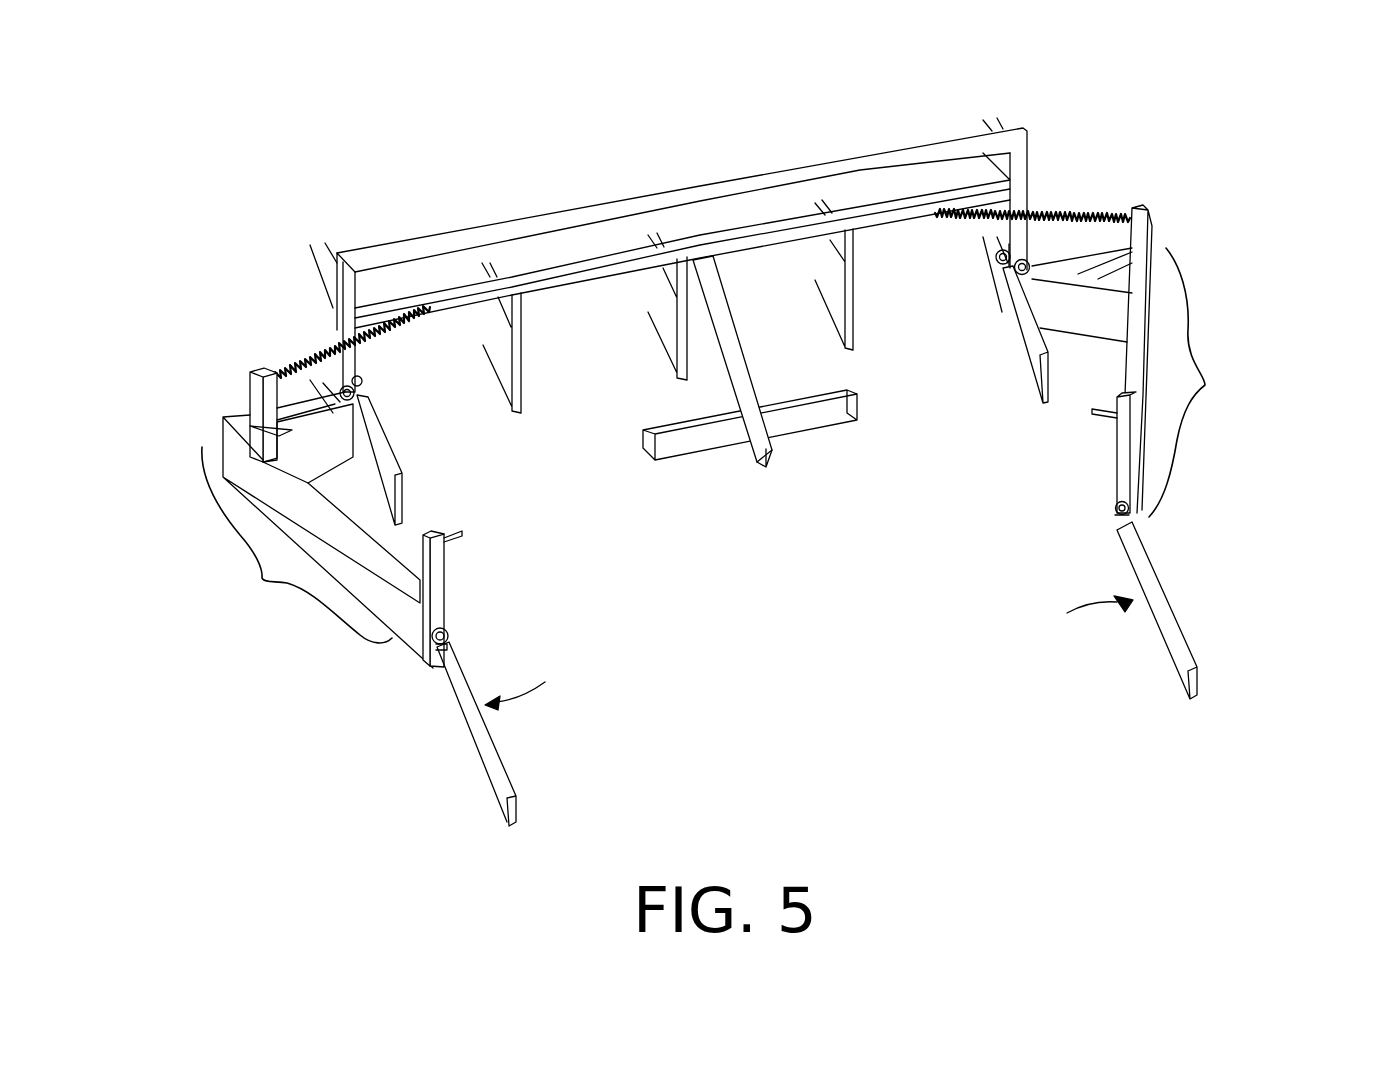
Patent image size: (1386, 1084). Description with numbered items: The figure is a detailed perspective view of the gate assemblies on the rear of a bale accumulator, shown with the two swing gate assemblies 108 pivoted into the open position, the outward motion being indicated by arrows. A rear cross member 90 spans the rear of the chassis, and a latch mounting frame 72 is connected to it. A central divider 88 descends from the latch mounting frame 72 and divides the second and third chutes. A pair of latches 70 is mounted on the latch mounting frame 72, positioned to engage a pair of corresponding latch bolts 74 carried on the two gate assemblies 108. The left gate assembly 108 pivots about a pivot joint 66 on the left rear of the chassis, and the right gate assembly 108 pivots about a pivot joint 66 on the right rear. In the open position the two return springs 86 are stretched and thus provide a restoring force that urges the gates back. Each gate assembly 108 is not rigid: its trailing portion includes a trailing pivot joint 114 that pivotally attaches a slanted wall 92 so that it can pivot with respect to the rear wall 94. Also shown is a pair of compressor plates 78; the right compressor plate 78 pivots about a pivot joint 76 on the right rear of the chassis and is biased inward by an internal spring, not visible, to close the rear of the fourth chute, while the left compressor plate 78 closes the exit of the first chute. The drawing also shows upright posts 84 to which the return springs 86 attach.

The pivot joint 66 is at (358, 400).
The latch 70 is at (647, 457).
The latch mounting frame 72 is at (733, 430).
The latch bolt 74 is at (458, 535).
The pivot joint 76 is at (1000, 245).
The compressor plate 78 is at (402, 483).
The post 84 is at (258, 400).
The return spring 86 is at (350, 370).
The central divider 88 is at (665, 320).
The rear cross member 90 is at (540, 270).
The slanted wall 92 is at (1163, 600).
The rear wall 94 is at (1133, 358).
The gate assembly 108 is at (258, 580).
The trailing pivot joint 114 is at (453, 637).